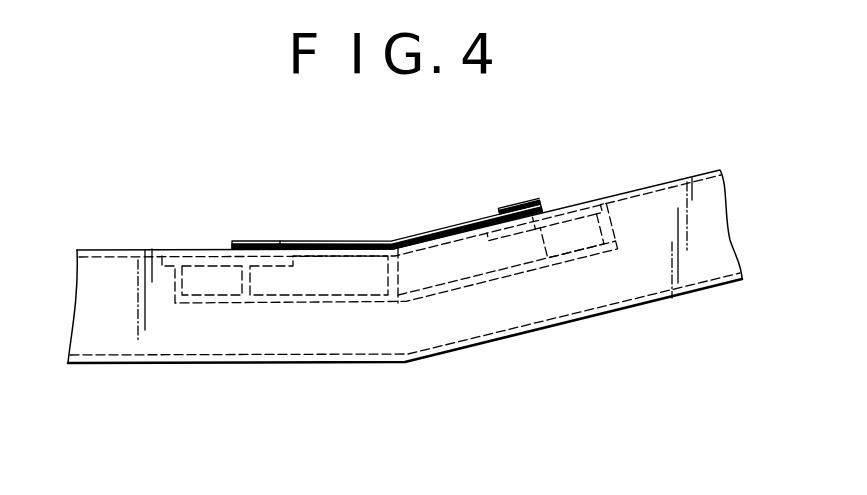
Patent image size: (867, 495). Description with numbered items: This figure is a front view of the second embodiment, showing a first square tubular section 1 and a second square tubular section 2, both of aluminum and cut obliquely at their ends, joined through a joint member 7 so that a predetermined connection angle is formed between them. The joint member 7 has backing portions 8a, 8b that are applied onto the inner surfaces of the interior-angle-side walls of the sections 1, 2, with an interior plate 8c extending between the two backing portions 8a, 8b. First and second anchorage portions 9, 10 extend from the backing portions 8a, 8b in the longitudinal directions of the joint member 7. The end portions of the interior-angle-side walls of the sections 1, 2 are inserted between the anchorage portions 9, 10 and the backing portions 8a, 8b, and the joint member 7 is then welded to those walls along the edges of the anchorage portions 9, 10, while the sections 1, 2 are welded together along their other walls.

The first square tubular section 1 is at (135, 330).
The second square tubular section 2 is at (642, 273).
The joint member 7 is at (474, 302).
The backing portion 8a is at (204, 262).
The backing portion 8b is at (567, 218).
The interior plate 8c is at (348, 247).
The first anchorage portion 9 is at (252, 241).
The second anchorage portion 10 is at (523, 210).